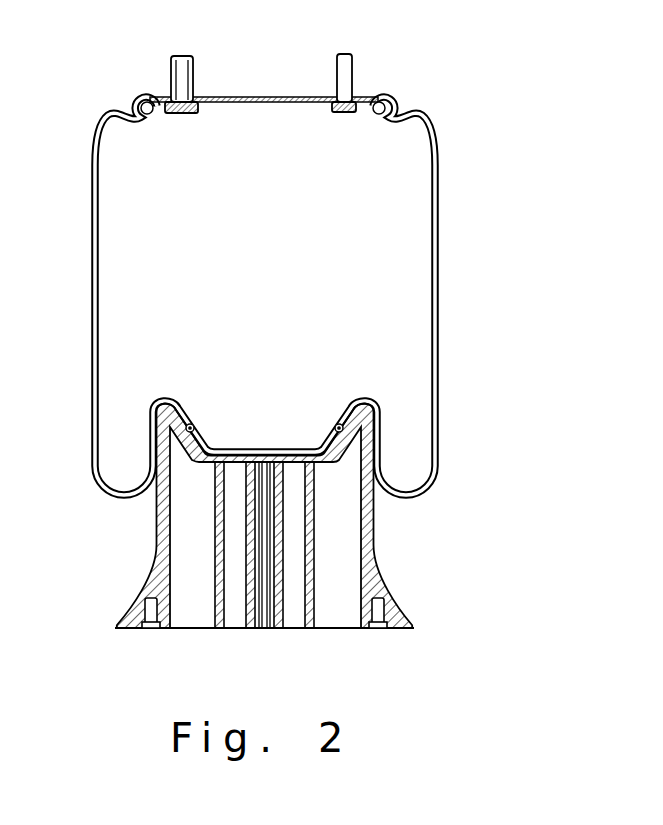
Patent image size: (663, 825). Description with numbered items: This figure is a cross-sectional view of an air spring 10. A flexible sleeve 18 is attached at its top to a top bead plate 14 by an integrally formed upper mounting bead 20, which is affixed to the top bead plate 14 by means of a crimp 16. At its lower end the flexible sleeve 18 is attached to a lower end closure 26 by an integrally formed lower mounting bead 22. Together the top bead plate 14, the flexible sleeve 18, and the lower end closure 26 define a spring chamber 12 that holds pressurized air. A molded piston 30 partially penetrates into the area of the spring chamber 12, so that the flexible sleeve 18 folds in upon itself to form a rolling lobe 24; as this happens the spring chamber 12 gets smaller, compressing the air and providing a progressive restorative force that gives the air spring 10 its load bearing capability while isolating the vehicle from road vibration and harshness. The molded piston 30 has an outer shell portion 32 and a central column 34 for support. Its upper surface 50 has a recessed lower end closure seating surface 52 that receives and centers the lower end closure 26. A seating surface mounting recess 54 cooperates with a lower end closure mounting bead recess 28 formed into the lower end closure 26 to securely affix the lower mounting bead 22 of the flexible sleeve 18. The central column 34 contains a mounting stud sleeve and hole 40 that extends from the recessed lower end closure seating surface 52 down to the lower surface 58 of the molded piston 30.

The air spring 10 is at (457, 148).
The spring chamber 12 is at (363, 252).
The top bead plate 14 is at (258, 96).
The crimp 16 is at (388, 100).
The flexible sleeve 18 is at (440, 326).
The upper mounting bead 20 is at (146, 100).
The lower mounting bead 22 is at (343, 433).
The rolling lobe 24 is at (438, 445).
The lower end closure 26 is at (198, 468).
The lower end closure mounting bead recess 28 is at (195, 425).
The molded piston 30 is at (408, 630).
The outer shell portion 32 is at (152, 556).
The central column 34 is at (196, 630).
The mounting stud sleeve and hole 40 is at (268, 630).
The upper surface 50 is at (232, 452).
The recessed lower end closure seating surface 52 is at (296, 450).
The seating surface mounting recess 54 is at (186, 428).
The lower surface 58 is at (363, 630).